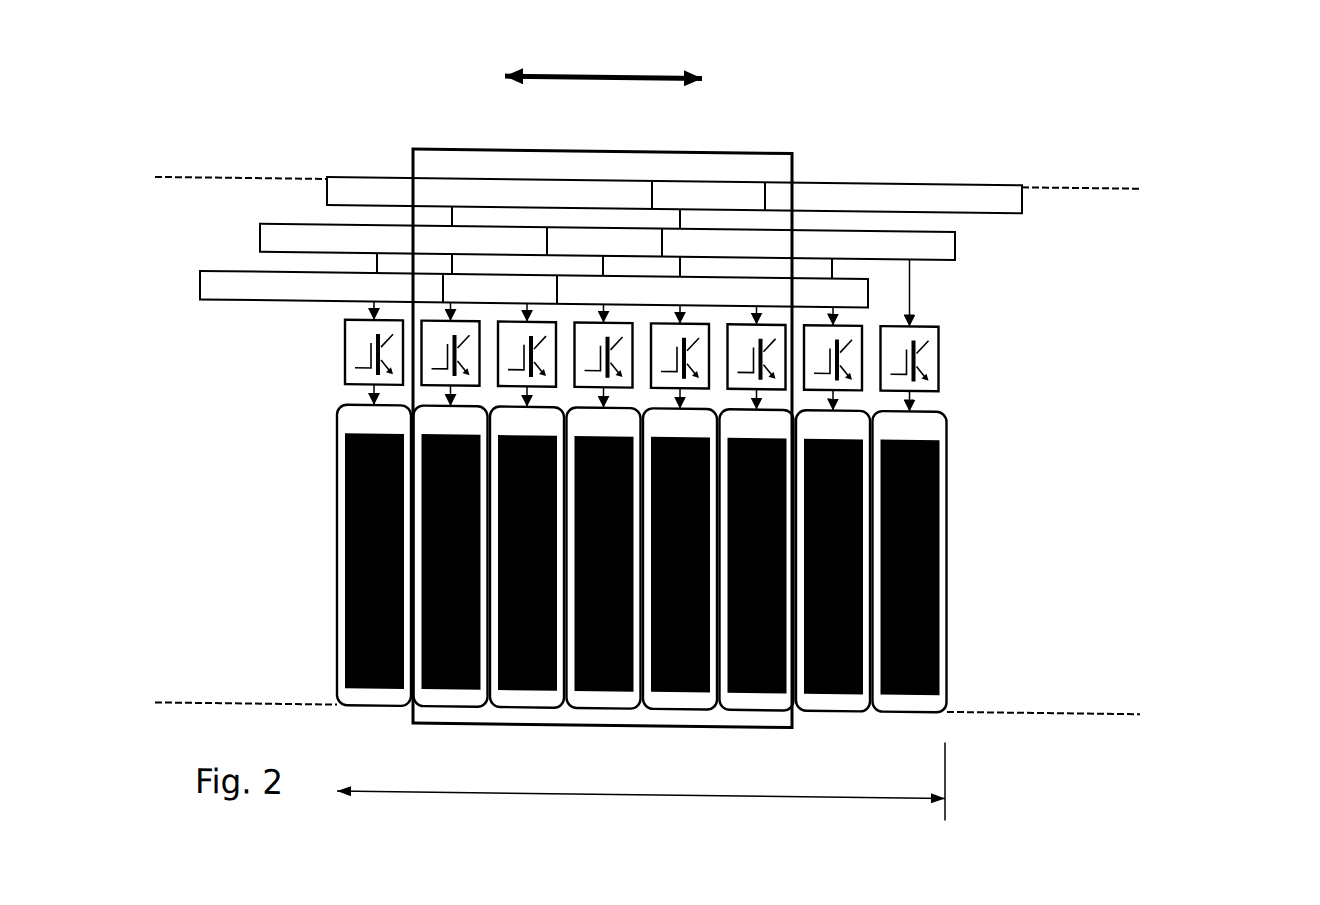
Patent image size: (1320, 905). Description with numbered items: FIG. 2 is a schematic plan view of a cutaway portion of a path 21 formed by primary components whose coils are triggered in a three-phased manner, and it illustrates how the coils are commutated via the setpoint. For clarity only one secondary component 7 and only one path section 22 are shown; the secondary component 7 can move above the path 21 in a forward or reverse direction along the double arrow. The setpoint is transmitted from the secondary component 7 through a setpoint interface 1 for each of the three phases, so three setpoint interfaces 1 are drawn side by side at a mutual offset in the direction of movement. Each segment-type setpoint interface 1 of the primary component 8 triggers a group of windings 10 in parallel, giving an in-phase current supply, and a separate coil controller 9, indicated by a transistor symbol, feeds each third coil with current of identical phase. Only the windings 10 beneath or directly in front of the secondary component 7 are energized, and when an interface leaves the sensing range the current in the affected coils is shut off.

The setpoint interface 1 is at (615, 236).
The secondary component 7 is at (508, 147).
The primary component 8 is at (955, 726).
The coil controller 9 is at (925, 354).
The windings 10 is at (937, 544).
The path 21 is at (452, 319).
The path section 22 is at (641, 777).